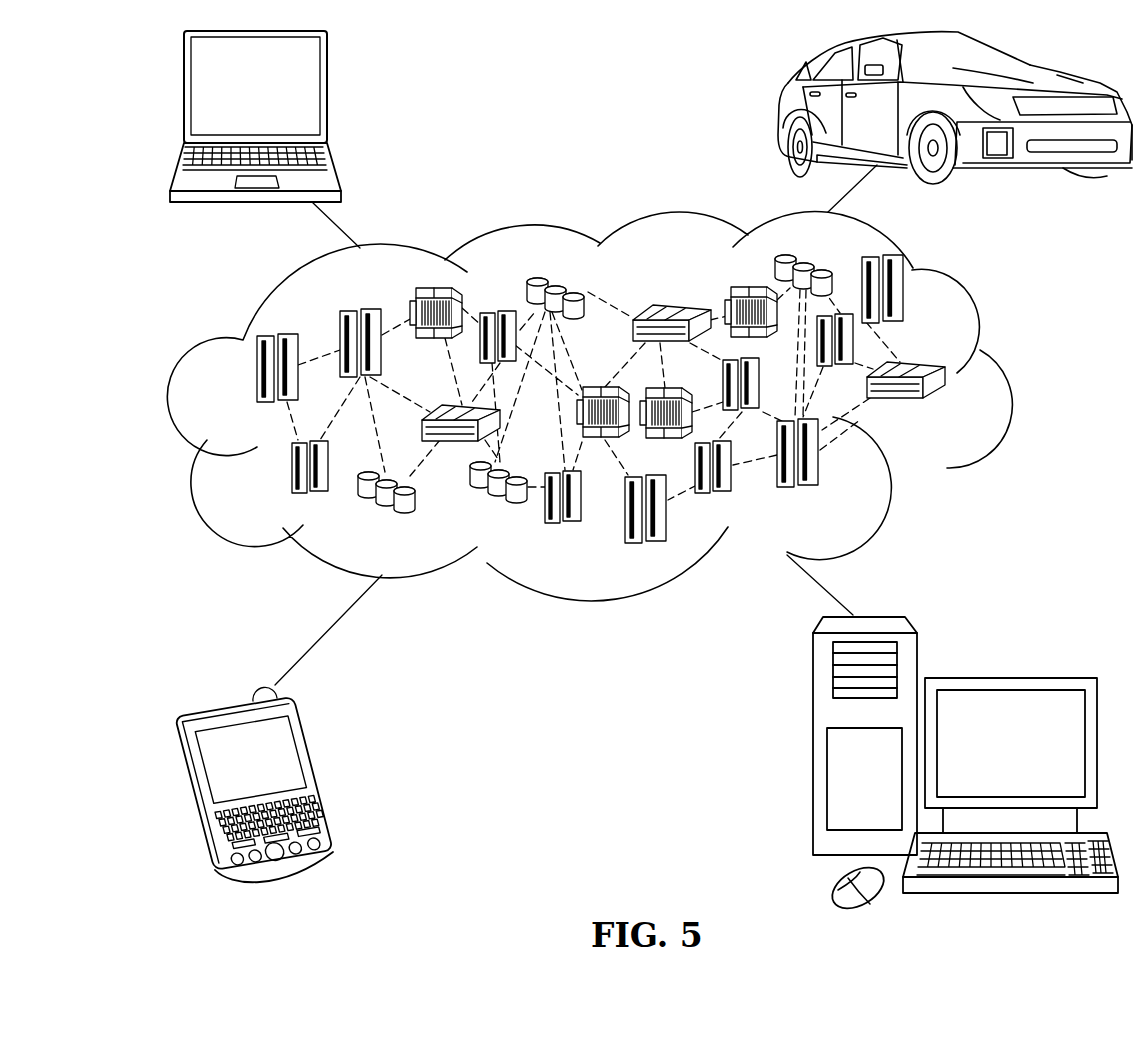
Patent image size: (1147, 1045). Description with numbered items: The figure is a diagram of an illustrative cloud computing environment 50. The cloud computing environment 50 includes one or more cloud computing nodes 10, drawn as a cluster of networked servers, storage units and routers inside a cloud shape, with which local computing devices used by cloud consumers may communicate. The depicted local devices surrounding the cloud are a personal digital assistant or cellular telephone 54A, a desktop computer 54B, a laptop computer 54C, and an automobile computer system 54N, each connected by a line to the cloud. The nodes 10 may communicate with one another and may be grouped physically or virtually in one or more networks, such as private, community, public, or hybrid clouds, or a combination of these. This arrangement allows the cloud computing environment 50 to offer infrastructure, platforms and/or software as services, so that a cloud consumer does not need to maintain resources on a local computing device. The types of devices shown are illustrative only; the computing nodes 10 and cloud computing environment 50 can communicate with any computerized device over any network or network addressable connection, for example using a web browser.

The cloud computing environment 50 is at (1007, 377).
The cloud computing node 10 is at (947, 408).
The personal digital assistant or cellular telephone 54A is at (317, 773).
The desktop computer 54B is at (1008, 677).
The laptop computer 54C is at (327, 93).
The automobile computer system 54N is at (781, 110).